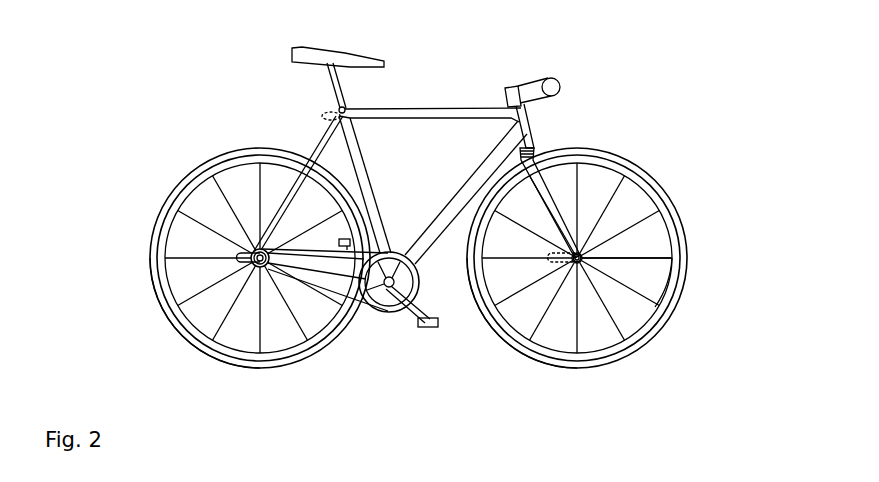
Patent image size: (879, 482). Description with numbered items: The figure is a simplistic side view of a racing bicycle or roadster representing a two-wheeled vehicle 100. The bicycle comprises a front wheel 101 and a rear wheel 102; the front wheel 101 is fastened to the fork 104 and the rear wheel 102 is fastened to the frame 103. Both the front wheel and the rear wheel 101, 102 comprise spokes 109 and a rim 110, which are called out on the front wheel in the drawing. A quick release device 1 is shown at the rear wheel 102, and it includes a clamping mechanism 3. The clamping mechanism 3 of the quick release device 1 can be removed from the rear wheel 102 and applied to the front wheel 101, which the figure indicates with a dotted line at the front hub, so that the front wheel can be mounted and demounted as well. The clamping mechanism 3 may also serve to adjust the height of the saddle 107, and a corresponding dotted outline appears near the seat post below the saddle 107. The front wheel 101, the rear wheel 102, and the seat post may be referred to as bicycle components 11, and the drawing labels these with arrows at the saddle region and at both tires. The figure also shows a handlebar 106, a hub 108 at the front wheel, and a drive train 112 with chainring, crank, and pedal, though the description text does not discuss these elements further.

The two-wheeled vehicle 100 is at (185, 82).
The front wheel 101 is at (662, 190).
The rear wheel 102 is at (180, 197).
The frame 103 is at (434, 108).
The fork 104 is at (547, 184).
The handlebar 106 is at (537, 80).
The saddle 107 is at (327, 54).
The hub 108 is at (585, 257).
The spokes 109 is at (657, 261).
The rim 110 is at (668, 292).
The drive train 112 is at (403, 236).
The quick release device 1 is at (562, 272).
The clamping mechanism 3 is at (327, 110).
The bicycle components 11 is at (272, 45).